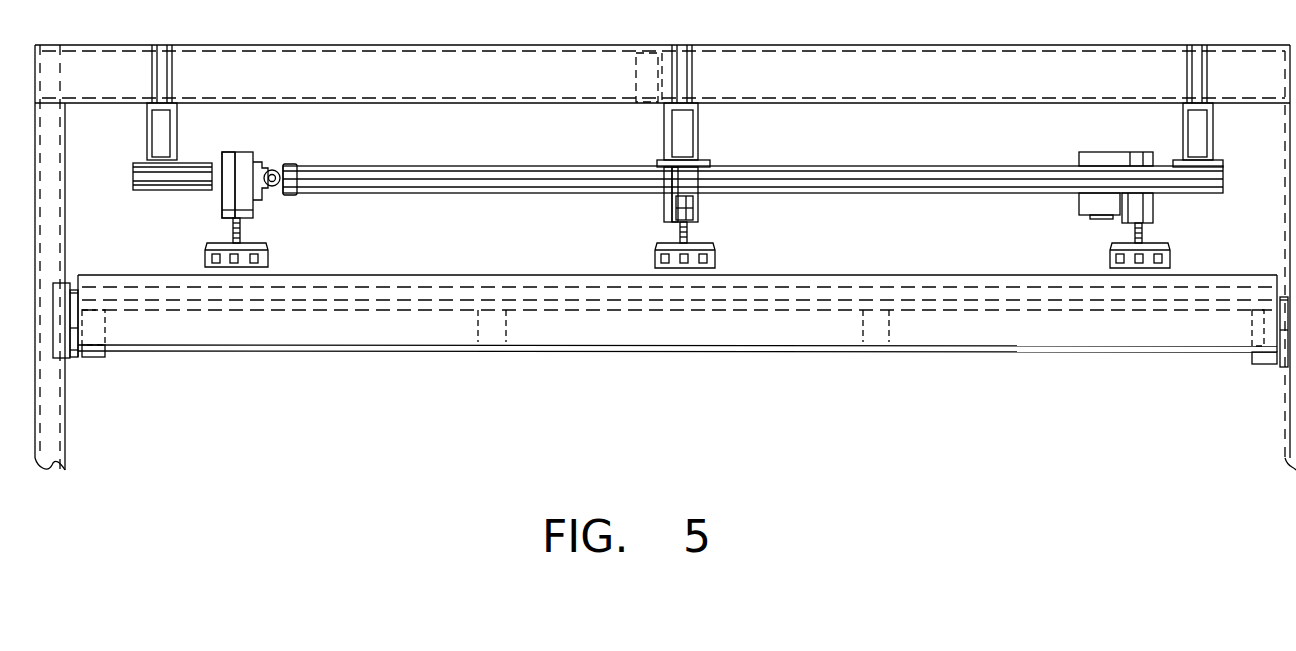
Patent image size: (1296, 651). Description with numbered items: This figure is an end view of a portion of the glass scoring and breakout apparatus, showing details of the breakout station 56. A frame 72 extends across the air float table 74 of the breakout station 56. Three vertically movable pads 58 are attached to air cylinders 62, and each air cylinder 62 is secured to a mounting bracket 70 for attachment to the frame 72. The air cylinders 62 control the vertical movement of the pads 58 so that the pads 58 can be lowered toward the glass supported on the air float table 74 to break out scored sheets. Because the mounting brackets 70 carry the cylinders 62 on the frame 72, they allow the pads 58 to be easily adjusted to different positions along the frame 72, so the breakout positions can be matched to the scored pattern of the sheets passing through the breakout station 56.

The breakout station 56 is at (670, 355).
The vertically movable pad 58 is at (268, 258).
The air cylinder 62 is at (232, 202).
The mounting bracket 70 is at (245, 155).
The frame 72 is at (928, 165).
The air float table 74 is at (958, 337).